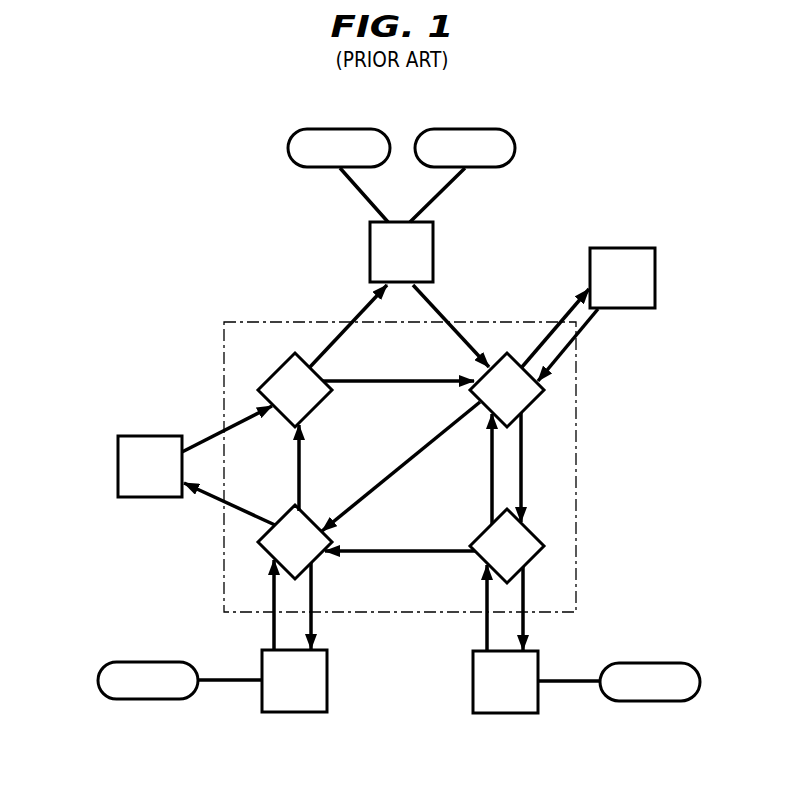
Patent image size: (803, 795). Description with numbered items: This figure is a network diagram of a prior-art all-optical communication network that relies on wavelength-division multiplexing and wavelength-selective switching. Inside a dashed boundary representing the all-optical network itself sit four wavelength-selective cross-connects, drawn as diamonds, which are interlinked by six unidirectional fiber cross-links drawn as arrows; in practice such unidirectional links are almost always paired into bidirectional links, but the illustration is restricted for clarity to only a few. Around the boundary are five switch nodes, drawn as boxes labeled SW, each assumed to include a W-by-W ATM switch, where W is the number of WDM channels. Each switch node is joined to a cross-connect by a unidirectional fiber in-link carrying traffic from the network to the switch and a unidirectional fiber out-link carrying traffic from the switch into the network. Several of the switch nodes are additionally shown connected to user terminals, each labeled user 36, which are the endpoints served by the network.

The user 36 is at (288, 147).